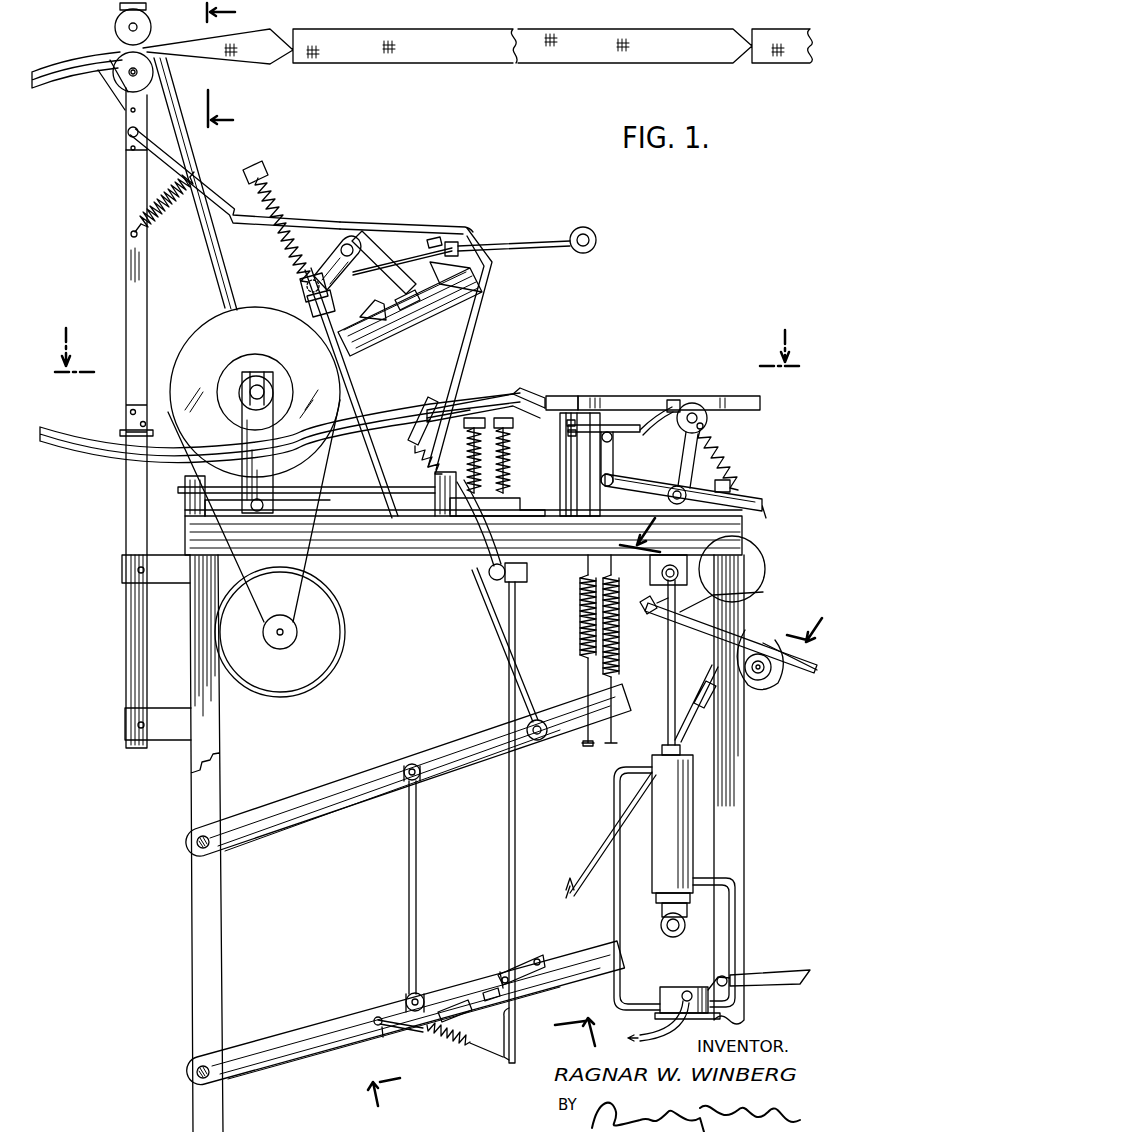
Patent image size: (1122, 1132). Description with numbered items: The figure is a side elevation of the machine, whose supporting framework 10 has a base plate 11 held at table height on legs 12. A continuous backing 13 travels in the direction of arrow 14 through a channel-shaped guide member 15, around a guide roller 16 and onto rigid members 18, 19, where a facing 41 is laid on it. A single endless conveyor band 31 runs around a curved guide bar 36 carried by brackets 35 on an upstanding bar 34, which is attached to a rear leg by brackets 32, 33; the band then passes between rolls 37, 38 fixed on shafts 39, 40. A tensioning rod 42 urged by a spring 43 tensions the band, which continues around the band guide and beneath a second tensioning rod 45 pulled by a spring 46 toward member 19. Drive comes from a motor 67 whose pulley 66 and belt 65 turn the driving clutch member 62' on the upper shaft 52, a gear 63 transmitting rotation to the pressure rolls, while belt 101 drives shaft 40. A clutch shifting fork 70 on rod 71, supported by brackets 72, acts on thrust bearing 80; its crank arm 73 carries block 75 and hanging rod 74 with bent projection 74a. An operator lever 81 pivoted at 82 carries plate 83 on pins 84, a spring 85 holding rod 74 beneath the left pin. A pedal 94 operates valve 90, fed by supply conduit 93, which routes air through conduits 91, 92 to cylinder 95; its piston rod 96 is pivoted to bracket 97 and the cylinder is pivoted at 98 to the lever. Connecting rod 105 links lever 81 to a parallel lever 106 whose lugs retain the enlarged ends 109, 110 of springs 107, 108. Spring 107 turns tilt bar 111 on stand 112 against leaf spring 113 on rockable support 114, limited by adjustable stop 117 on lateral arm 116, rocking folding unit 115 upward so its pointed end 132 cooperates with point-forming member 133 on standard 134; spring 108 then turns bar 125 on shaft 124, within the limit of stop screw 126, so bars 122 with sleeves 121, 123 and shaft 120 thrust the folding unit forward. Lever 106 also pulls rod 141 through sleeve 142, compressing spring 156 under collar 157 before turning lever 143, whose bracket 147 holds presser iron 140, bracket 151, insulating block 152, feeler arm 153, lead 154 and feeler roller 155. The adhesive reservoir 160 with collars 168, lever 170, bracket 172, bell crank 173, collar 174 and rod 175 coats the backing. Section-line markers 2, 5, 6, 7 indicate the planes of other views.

The supporting framework 10 is at (149, 814).
The base plate 11 is at (388, 557).
The legs 12 is at (219, 754).
The continuous backing 13 is at (610, 858).
The arrow 14 is at (566, 890).
The channel-shaped guide member 15 is at (694, 712).
The guide roller 16 is at (766, 566).
The rigid member 18 is at (494, 400).
The elongated rigid member 19 is at (462, 408).
The endless conveyor band 31 is at (405, 220).
The bracket 32 is at (172, 742).
The bracket 33 is at (172, 585).
The upstanding bar 34 is at (125, 478).
The brackets 35 is at (127, 124).
The curved guide bar 36 is at (45, 90).
The roll 37 is at (146, 18).
The roll 38 is at (150, 75).
The shaft 39 is at (130, 27).
The shaft 40 is at (131, 75).
The facing 41 is at (286, 58).
The tensioning rod 42 is at (205, 180).
The spring 43 is at (145, 203).
The second tensioning rod 45 is at (420, 405).
The spring 46 is at (414, 468).
The upper shaft 52 is at (260, 385).
The driving clutch member 62' is at (248, 392).
The gear 63 is at (228, 508).
The pulley belt 65 is at (312, 600).
The pulley 66 is at (282, 640).
The motor 67 is at (305, 690).
The clutch shifting fork 70 is at (243, 443).
The rod 71 is at (365, 495).
The brackets 72 is at (186, 515).
The crank arm 73 is at (483, 572).
The rod 74 is at (508, 830).
The projection 74a is at (504, 1022).
The block 75 is at (528, 575).
The thrust bearing 80 is at (245, 400).
The lever 81 is at (322, 1035).
The pivot 82 is at (196, 1076).
The plate 83 is at (527, 982).
The pins 84 is at (502, 974).
The spring 85 is at (447, 1052).
The pedal-operated valve 90 is at (677, 987).
The conduit 91 is at (736, 918).
The conduit 92 is at (612, 914).
The supply conduit 93 is at (636, 1034).
The pedal 94 is at (782, 972).
The cylinder 95 is at (690, 820).
The piston rod 96 is at (667, 686).
The bracket 97 is at (660, 568).
The pivot connection 98 is at (676, 918).
The belt 101 is at (222, 262).
The connecting rod 105 is at (408, 914).
The second lever 106 is at (322, 828).
The spring 107 is at (580, 604).
The spring 108 is at (618, 640).
The enlarged end 109 is at (586, 748).
The enlarged end 110 is at (630, 712).
The tilt bar 111 is at (625, 425).
The stand 112 is at (607, 430).
The leaf spring 113 is at (660, 410).
The rockable support 114 is at (674, 400).
The folding unit 115 is at (708, 396).
The lateral arm 116 is at (565, 427).
The adjustable stop 117 is at (566, 436).
The shaft 120 is at (692, 410).
The sleeves 121 is at (708, 424).
The bars 122 is at (700, 452).
The sleeves 123 is at (732, 470).
The shaft 124 is at (676, 505).
The bar 125 is at (745, 500).
The stop screw 126 is at (732, 486).
The pointed end 132 is at (566, 396).
The point-forming member 133 is at (535, 398).
The standard 134 is at (568, 470).
The presser iron 140 is at (390, 338).
The rod 141 is at (492, 640).
The sleeve 142 is at (330, 290).
The lever 143 is at (328, 262).
The bracket 147 is at (408, 277).
The additional bracket 151 is at (416, 266).
The insulating block 152 is at (460, 240).
The feeler arm 153 is at (528, 241).
The electrical lead 154 is at (440, 238).
The feeler roller 155 is at (597, 233).
The spring 156 is at (283, 193).
The collar 157 is at (266, 165).
The adhesive reservoir 160 is at (783, 672).
The collars 168 is at (757, 680).
The manually turnable lever 170 is at (808, 672).
The bracket 172 is at (692, 627).
The bell crank 173 is at (750, 596).
The collar 174 is at (488, 455).
The rod 175 is at (648, 612).
The section line 2- 2 is at (427, 348).
The section line 5- 5 is at (721, 580).
The section line 6- 6 is at (229, 66).
The section line 7- 7 is at (481, 1069).